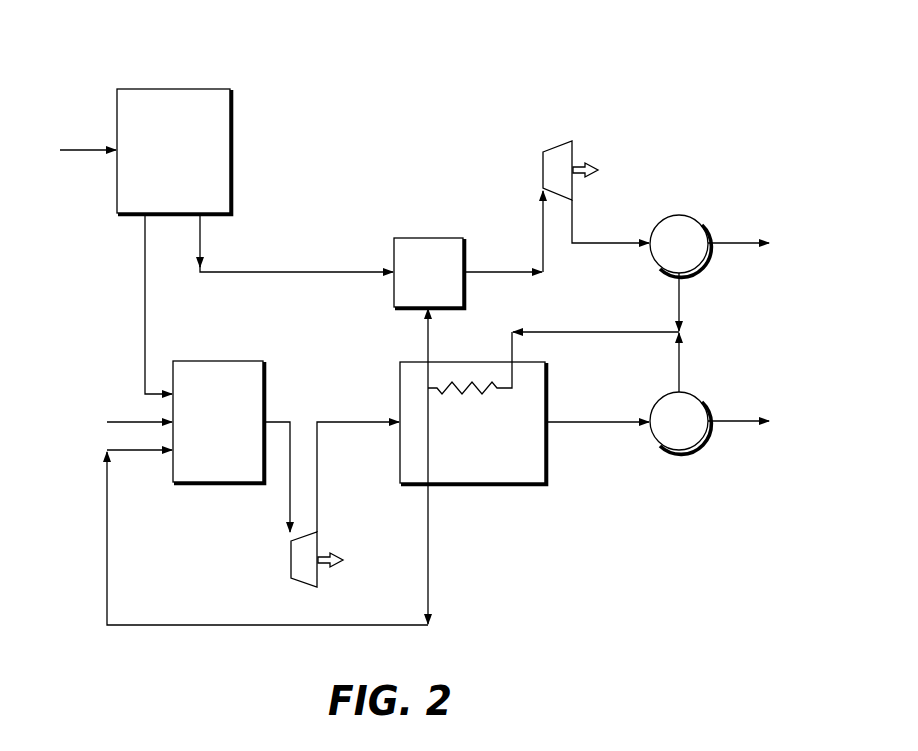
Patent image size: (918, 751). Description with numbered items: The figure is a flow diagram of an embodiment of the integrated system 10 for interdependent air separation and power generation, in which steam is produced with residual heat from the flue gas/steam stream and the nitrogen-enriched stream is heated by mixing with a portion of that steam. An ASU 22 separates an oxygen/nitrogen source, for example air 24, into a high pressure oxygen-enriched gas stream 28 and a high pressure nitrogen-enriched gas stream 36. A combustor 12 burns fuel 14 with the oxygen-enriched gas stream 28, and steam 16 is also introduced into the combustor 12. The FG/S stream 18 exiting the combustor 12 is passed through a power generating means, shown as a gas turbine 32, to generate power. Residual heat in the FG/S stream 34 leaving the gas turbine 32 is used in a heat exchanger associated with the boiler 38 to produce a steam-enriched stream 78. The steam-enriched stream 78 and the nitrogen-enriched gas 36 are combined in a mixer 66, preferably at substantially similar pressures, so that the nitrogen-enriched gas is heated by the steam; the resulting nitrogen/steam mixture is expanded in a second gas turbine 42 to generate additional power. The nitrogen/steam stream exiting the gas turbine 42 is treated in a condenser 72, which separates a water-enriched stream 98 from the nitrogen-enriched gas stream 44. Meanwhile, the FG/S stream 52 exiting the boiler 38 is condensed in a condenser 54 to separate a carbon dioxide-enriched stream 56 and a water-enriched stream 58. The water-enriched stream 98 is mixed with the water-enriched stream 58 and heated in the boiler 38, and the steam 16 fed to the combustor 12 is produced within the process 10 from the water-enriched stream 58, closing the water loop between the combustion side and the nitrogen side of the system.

The integrated system 10 is at (587, 55).
The combustor 12 is at (248, 361).
The fuel 14 is at (125, 422).
The steam 16 is at (135, 455).
The FG/S stream 18 is at (283, 418).
The ASU 22 is at (201, 89).
The air 24 is at (78, 150).
The high pressure O2-enriched gas stream 28 is at (145, 283).
The gas turbine 32 is at (315, 585).
The FG/S stream 34 is at (373, 422).
The high pressure N2-enriched gas stream 36 is at (295, 272).
The boiler 38 is at (527, 483).
The gas turbine 42 is at (548, 150).
The N2-enriched gas stream 44 is at (742, 243).
The FG/S stream 52 is at (585, 421).
The condenser 54 is at (685, 450).
The CO2-enriched stream 56 is at (742, 421).
The water-enriched stream 58 is at (682, 350).
The mixer 66 is at (440, 238).
The condenser 72 is at (685, 215).
The steam-enriched stream 78 is at (427, 338).
The water-enriched stream 98 is at (676, 298).